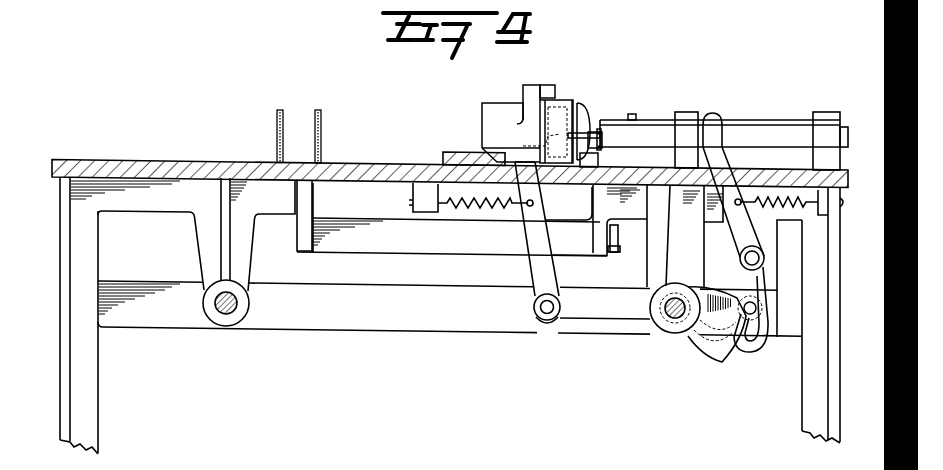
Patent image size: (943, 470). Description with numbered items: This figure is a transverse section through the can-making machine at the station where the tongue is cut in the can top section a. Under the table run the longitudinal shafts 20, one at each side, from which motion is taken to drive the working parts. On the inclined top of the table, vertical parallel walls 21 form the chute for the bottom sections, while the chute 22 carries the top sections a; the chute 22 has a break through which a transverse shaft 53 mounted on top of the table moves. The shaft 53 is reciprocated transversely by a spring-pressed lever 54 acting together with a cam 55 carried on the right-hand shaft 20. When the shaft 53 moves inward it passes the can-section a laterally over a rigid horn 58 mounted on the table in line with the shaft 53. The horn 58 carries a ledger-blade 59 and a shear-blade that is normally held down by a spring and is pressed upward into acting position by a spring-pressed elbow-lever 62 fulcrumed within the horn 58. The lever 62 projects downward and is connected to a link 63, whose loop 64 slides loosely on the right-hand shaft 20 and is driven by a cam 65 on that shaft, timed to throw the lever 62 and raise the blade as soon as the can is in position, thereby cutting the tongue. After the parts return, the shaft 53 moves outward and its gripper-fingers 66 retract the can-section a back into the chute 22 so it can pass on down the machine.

The longitudinal shaft 20 is at (225, 314).
The vertical parallel walls 21 is at (315, 122).
The chute 22 is at (633, 117).
The transverse shaft 53 is at (752, 135).
The spring-pressed lever 54 is at (758, 281).
The cam 55 is at (717, 345).
The rigid horn 58 is at (490, 113).
The ledger-blade 59 is at (543, 100).
The top section of the can a is at (571, 102).
The spring-pressed elbow-lever 62 is at (530, 259).
The link 63 is at (618, 301).
The loop 64 is at (703, 293).
The cam 65 is at (760, 299).
The gripper-fingers 66 is at (591, 124).